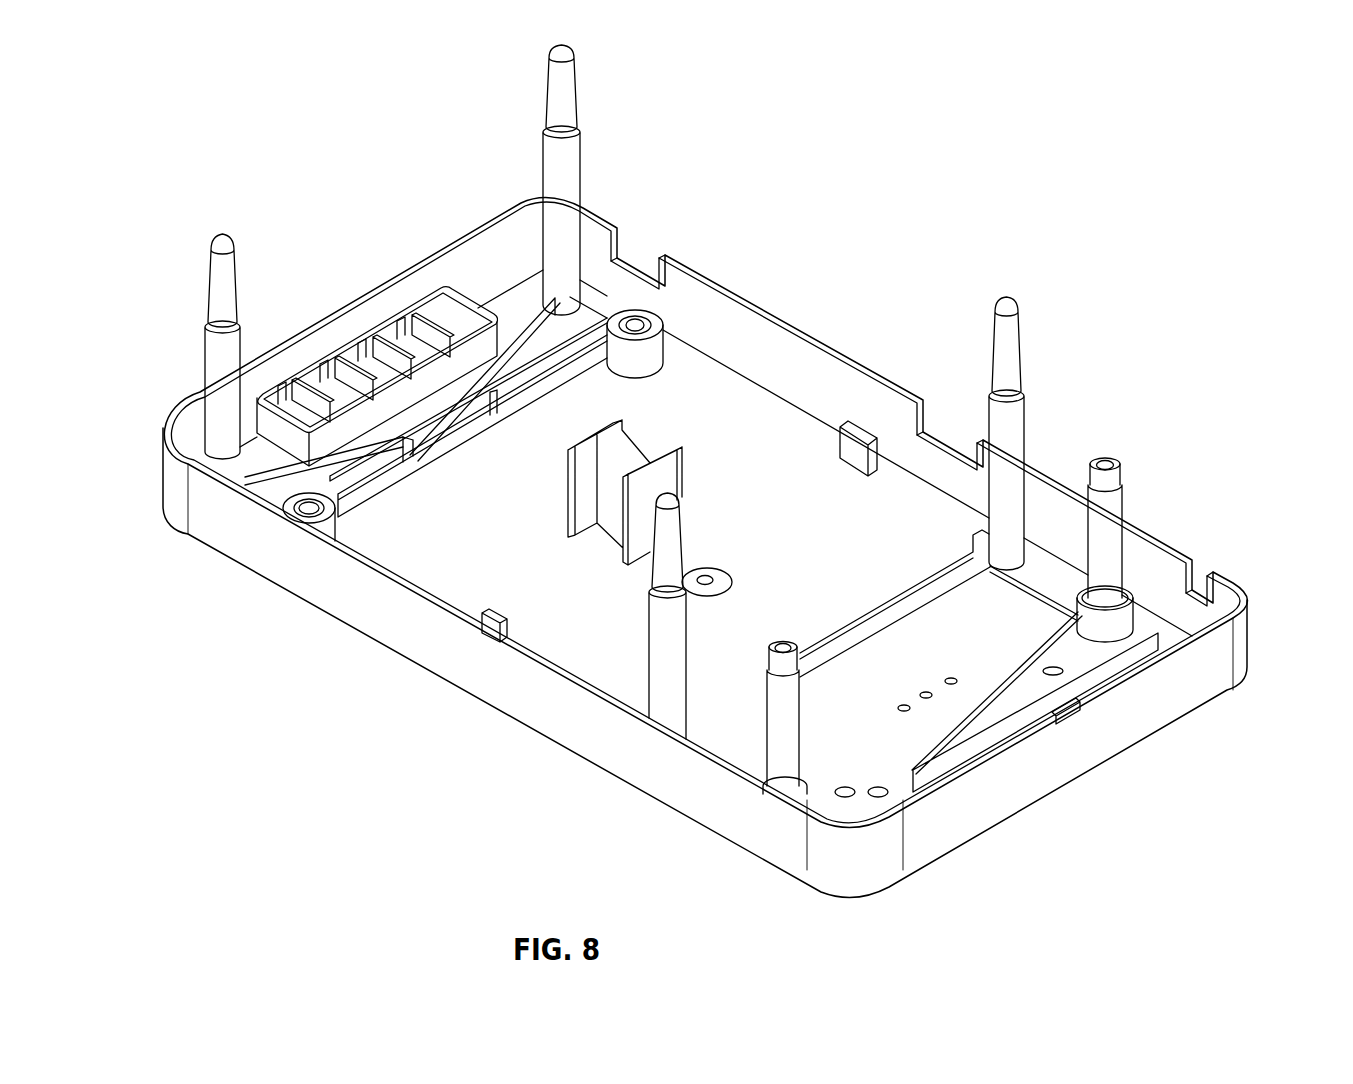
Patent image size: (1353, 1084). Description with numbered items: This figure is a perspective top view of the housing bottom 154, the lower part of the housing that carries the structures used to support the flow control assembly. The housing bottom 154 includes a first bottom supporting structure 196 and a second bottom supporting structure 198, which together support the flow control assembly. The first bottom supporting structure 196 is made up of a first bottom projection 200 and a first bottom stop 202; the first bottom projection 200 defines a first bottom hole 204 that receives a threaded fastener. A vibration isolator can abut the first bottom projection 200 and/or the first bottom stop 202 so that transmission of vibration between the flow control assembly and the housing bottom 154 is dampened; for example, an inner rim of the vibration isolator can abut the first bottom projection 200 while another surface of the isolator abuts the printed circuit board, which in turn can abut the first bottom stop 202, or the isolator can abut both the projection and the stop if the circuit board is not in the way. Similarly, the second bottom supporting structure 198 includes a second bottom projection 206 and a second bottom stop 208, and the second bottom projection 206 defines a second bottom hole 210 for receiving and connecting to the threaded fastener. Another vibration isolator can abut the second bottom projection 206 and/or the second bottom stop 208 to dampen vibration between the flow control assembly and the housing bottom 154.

The housing bottom 154 is at (173, 484).
The first bottom supporting structure 196 is at (758, 758).
The second bottom supporting structure 198 is at (1127, 540).
The first bottom projection 200 is at (782, 733).
The first bottom stop 202 is at (775, 792).
The first bottom hole 204 is at (785, 642).
The second bottom projection 206 is at (1110, 493).
The second bottom stop 208 is at (1130, 572).
The second bottom hole 210 is at (1107, 458).